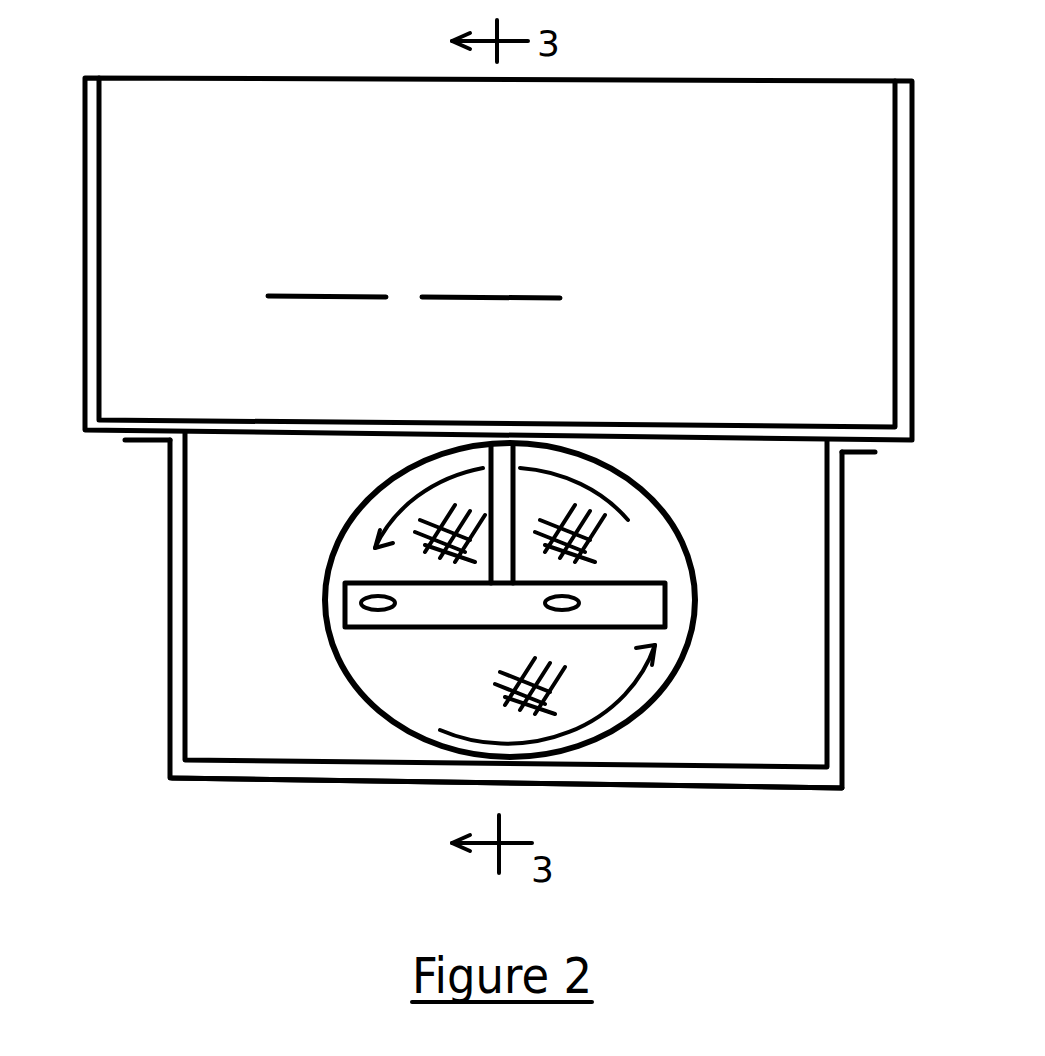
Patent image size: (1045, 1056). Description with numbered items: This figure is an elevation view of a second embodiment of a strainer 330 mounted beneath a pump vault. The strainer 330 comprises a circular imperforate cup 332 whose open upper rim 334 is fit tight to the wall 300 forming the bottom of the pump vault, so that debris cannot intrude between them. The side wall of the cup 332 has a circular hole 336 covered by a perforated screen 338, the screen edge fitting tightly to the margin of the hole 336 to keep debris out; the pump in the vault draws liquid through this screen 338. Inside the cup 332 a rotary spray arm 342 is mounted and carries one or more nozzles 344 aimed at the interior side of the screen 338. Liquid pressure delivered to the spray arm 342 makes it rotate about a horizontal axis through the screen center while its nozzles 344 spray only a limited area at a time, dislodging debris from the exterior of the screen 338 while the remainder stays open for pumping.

The wall 300 is at (90, 433).
The strainer 330 is at (170, 658).
The circular imperforate cup 332 is at (172, 778).
The open upper rim 334 is at (152, 455).
The circular hole 336 is at (470, 632).
The perforated screen 338 is at (507, 683).
The rotary spray arm 342 is at (487, 628).
The nozzles 344 is at (375, 598).